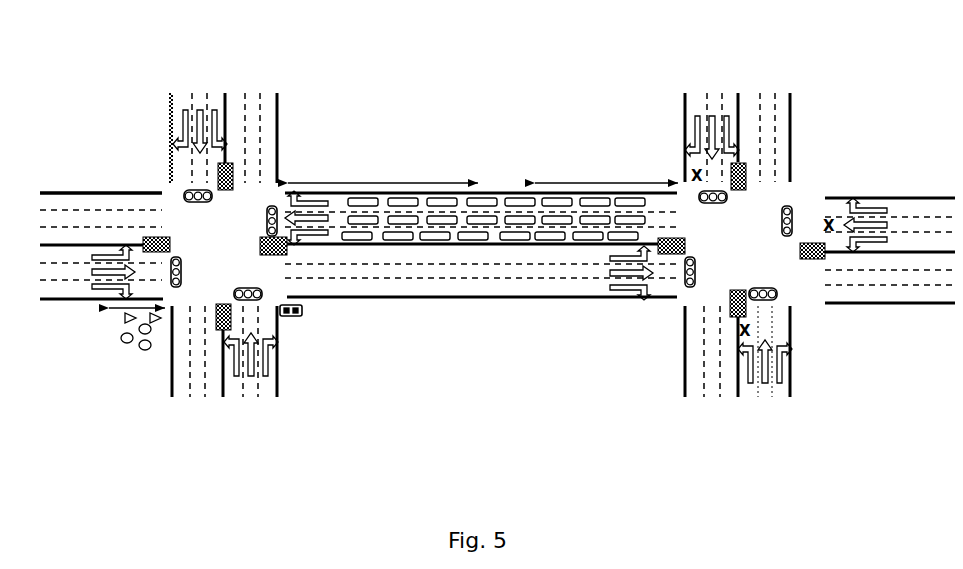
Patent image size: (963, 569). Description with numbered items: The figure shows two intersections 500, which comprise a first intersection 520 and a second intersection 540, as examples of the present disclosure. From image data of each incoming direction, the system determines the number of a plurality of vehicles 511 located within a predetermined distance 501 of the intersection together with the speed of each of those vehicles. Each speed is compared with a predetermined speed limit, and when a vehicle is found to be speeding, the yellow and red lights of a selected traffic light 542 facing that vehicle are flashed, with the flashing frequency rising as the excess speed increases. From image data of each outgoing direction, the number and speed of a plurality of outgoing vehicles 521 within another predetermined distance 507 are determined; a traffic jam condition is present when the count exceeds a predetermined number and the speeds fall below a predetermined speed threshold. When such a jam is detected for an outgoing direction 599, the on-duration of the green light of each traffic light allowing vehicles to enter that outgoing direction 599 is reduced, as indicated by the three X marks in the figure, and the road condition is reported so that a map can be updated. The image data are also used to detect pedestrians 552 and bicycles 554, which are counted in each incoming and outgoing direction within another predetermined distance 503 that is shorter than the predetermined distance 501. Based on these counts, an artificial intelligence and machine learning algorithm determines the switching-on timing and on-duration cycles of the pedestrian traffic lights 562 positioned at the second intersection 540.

The two intersections 500 is at (793, 57).
The predetermined distance 501 is at (383, 170).
The predetermined distance 503 is at (115, 311).
The predetermined distance 507 is at (606, 170).
The plurality of vehicles 511 is at (337, 235).
The first intersection 520 is at (823, 177).
The plurality of outgoing vehicles 521 is at (569, 238).
The second intersection 540 is at (144, 159).
The traffic light 542 is at (275, 202).
The pedestrians 552 is at (138, 352).
The bicycles 554 is at (120, 318).
The pedestrian traffic lights 562 is at (291, 322).
The outgoing direction 599 is at (676, 219).